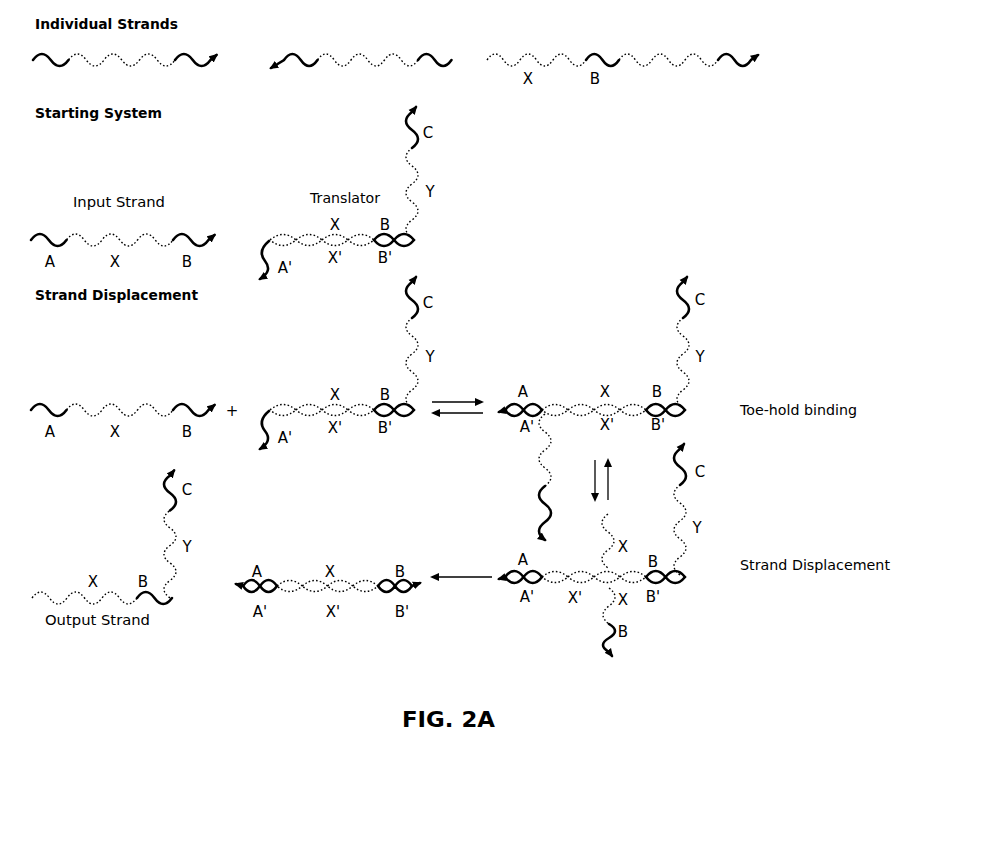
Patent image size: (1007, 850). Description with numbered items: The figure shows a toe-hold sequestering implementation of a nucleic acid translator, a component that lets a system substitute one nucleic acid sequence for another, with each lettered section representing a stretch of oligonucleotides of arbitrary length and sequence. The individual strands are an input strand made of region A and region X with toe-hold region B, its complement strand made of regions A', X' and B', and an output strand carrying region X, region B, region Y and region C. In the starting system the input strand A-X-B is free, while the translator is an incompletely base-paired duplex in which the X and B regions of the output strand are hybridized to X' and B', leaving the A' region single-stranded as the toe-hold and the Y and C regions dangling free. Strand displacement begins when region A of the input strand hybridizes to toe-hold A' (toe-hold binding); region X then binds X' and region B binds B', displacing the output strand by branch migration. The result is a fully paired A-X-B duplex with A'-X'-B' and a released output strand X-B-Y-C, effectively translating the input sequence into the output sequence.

The sequence region A is at (51, 72).
The sequence region X is at (122, 72).
The sequence region B is at (196, 72).
The A' region A' is at (294, 72).
The X' region X' is at (368, 72).
The B' region B' is at (435, 72).
The sequence region Y is at (668, 71).
The sequence region C is at (738, 71).